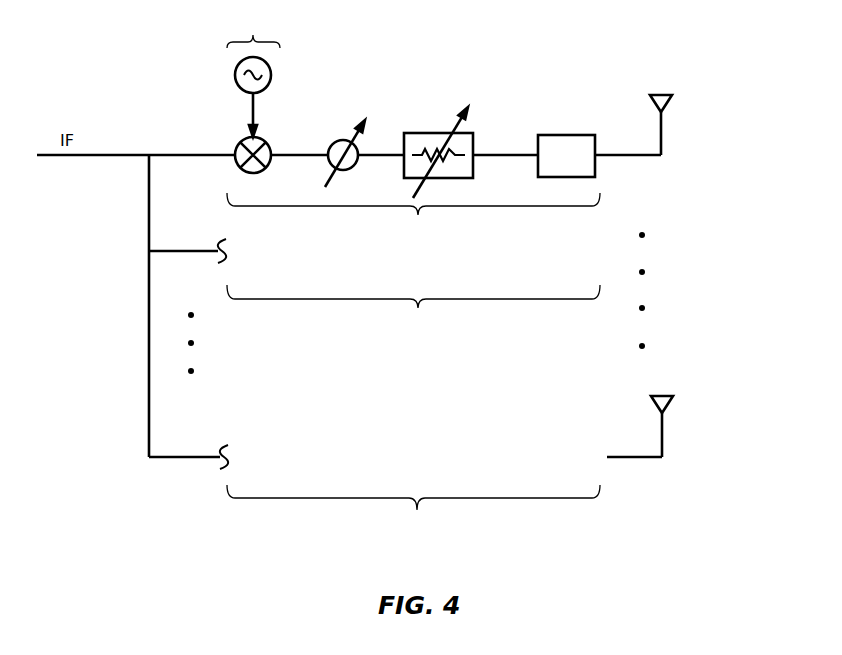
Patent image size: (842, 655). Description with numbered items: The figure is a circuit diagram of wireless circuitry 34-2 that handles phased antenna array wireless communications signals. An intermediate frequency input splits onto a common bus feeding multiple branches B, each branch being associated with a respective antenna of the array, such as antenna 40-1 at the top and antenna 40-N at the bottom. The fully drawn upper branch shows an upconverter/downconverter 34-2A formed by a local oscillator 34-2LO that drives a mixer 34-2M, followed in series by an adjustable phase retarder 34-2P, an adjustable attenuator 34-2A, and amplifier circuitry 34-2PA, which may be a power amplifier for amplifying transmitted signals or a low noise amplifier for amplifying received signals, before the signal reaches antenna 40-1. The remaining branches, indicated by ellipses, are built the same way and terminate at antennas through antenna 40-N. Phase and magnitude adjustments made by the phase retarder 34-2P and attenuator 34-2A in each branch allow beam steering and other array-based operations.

The wireless circuitry 34-2 is at (413, 375).
The adjustable attenuator 34-2A is at (471, 133).
The local oscillator 34-2LO is at (271, 70).
The mixer 34-2M is at (264, 139).
The adjustable phase retarder 34-2P is at (362, 145).
The amplifier circuitry 34-2PA is at (566, 135).
The antenna 40-1 is at (668, 100).
The antenna 40-N is at (669, 401).